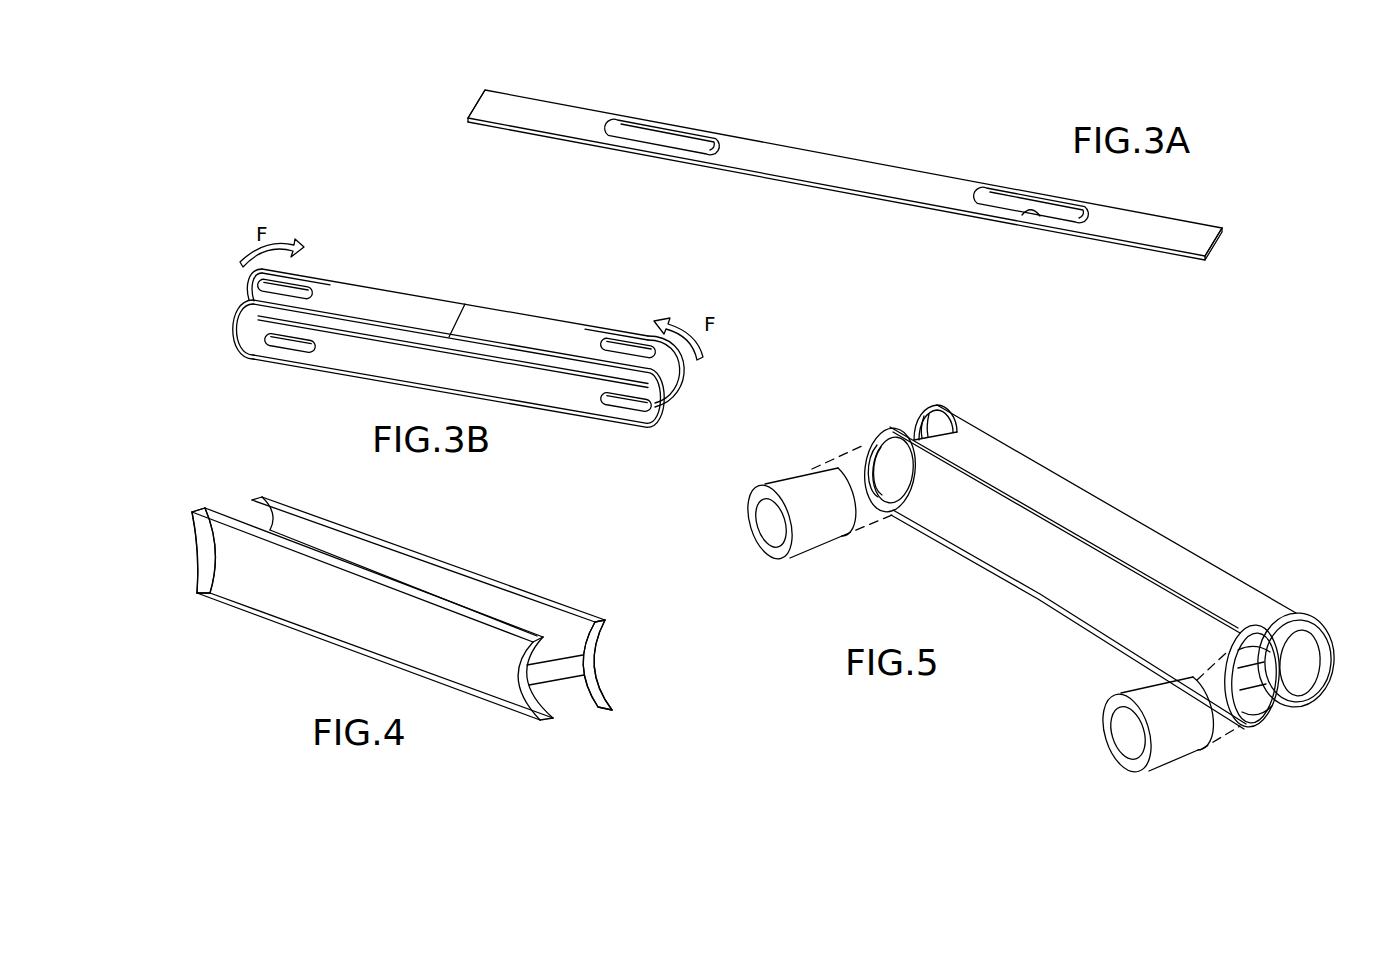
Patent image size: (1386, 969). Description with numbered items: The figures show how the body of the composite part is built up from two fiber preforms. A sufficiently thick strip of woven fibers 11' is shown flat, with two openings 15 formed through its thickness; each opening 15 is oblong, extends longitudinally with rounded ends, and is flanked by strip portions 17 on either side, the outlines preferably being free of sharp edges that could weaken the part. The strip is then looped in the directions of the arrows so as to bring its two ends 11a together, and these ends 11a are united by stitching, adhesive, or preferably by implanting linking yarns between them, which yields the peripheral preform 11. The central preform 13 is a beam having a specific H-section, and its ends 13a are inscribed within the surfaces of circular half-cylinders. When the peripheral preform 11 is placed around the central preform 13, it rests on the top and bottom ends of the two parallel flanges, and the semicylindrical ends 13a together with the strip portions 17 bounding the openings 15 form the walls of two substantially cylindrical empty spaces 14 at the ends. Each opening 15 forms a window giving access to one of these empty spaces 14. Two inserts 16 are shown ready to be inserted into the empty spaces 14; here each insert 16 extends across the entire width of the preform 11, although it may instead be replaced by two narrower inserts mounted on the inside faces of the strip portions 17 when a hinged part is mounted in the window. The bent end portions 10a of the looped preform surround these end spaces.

In FIG. 5, the bent end portion of band 10a is at (909, 406).
In FIG. 3B, the peripheral fiber preform 11 is at (454, 328).
In FIG. 5, the peripheral fiber preform 11 is at (1093, 519).
In FIG. 3A, the strip of fibers 11' is at (845, 160).
In FIG. 3A, the ends of the strip 11a is at (476, 104).
In FIG. 3B, the ends of the strip 11a is at (464, 303).
In FIG. 4, the central fiber preform 13 is at (280, 662).
In FIG. 5, the central fiber preform 13 is at (1073, 607).
In FIG. 4, the ends of the central preform 13a is at (236, 503).
In FIG. 5, the empty spaces 14 is at (900, 468).
In FIG. 3A, the openings 15 is at (666, 140).
In FIG. 3B, the openings 15 is at (231, 299).
In FIG. 5, the openings 15 is at (1298, 715).
In FIG. 5, the insert 16 is at (816, 540).
In FIG. 3A, the strip portions 17 is at (1036, 218).
In FIG. 5, the strip portions 17 is at (1326, 668).